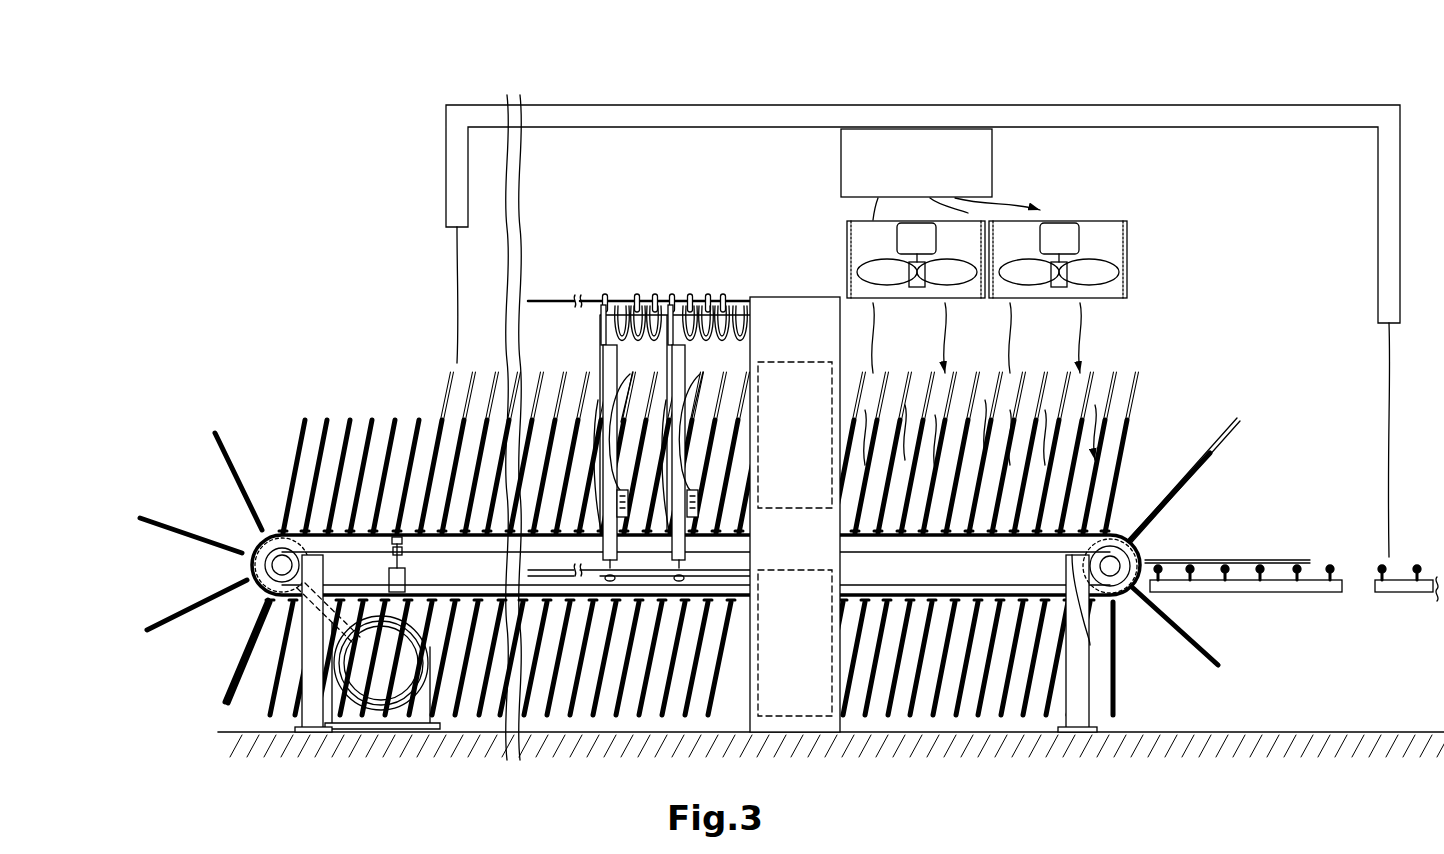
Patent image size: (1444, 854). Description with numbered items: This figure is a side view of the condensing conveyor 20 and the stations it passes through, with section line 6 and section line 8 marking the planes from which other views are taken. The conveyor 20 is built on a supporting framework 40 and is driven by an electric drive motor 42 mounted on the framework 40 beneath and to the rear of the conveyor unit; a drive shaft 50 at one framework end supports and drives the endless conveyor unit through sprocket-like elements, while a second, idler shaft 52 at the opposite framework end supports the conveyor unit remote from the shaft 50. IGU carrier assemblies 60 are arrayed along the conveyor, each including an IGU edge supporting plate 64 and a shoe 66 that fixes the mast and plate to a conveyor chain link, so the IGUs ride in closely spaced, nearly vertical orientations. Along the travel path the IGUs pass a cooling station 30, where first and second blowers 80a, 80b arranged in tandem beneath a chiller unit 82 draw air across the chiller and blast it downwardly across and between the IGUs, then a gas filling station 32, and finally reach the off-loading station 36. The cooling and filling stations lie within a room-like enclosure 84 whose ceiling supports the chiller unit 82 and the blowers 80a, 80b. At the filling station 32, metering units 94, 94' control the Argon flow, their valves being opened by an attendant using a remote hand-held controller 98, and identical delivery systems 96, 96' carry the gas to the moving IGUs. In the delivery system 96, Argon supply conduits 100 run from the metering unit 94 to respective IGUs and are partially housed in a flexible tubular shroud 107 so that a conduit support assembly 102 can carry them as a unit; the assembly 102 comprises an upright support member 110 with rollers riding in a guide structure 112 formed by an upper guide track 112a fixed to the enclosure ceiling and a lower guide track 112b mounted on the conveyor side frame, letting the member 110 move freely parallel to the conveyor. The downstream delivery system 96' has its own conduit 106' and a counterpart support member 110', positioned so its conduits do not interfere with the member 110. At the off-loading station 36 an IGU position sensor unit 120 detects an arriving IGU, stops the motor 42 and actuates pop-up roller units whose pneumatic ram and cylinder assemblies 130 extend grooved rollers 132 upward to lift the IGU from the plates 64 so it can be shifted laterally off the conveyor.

The section line 6- 6 is at (742, 306).
The section line 8- 8 is at (428, 787).
The condensing conveyor 20 is at (950, 573).
The cooling station 30 is at (1112, 330).
The gas filling station 32 is at (640, 225).
The off-loading station 36 is at (330, 398).
The supporting framework 40 is at (905, 570).
The drive motor 42 is at (357, 663).
The shaft 50 is at (270, 566).
The idler shaft 52 is at (275, 622).
The IGU carrier assembly 60 is at (1123, 443).
The IGU edge supporting plate 64 is at (1060, 590).
The shoe 66 is at (1060, 623).
The first blower 80a is at (897, 300).
The second blower 80b is at (1097, 236).
The chiller unit 82 is at (944, 146).
The enclosure 84 is at (1177, 100).
The metering unit 94 is at (795, 514).
The metering unit 94' is at (795, 700).
The delivery system 96 is at (666, 261).
The delivery system 96' is at (559, 275).
The remote hand-held controller 98 is at (705, 500).
The Argon supply conduit 100 is at (624, 377).
The conduit support assembly 102 is at (540, 298).
The conduit 106' is at (612, 381).
The flexible tubular shroud 107 is at (715, 298).
The support member 110 is at (705, 443).
The lower rail 110' is at (639, 681).
The guide structure 112 is at (640, 596).
The upper guide track 112a is at (677, 298).
The lower guide track 112b is at (530, 600).
The IGU position sensor unit 120 is at (405, 587).
The pneumatic ram and cylinder assembly 130 is at (397, 578).
The roller 132 is at (391, 538).